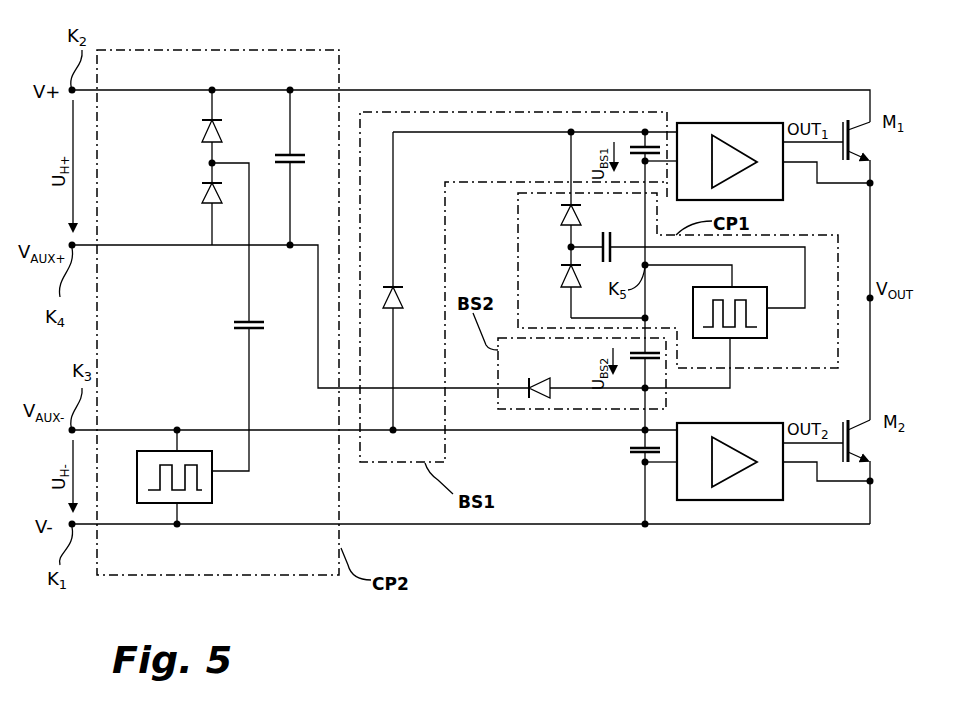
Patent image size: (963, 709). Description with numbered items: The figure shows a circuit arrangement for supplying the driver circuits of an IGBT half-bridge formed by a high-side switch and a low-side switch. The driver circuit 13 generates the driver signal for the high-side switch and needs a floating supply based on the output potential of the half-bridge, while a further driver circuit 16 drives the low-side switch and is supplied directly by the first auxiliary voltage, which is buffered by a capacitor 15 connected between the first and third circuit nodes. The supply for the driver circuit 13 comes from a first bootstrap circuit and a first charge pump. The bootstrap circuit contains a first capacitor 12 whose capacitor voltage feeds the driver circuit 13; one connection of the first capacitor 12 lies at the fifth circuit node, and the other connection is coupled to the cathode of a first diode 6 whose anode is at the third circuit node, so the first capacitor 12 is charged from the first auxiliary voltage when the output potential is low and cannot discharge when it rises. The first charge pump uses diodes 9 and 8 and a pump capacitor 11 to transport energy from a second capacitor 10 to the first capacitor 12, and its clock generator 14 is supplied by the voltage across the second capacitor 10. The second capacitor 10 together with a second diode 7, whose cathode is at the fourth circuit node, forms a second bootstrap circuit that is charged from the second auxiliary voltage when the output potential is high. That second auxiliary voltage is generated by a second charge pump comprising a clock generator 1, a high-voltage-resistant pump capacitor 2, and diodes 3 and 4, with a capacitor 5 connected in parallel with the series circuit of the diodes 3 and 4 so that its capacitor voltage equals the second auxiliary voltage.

The clock generator 1 is at (137, 473).
The pump capacitor 2 is at (257, 322).
The diode 3 is at (205, 204).
The diode 4 is at (204, 126).
The capacitor 5 is at (298, 167).
The first diode 6 is at (399, 281).
The second diode 7 is at (536, 377).
The diode 8 is at (564, 282).
The diode 9 is at (564, 189).
The second capacitor 10 is at (640, 369).
The pump capacitor 11 is at (611, 235).
The first capacitor 12 is at (640, 161).
The driver circuit 13 is at (783, 195).
The clock generator 14 is at (767, 318).
The capacitor 15 is at (631, 451).
The further driver circuit 16 is at (783, 487).